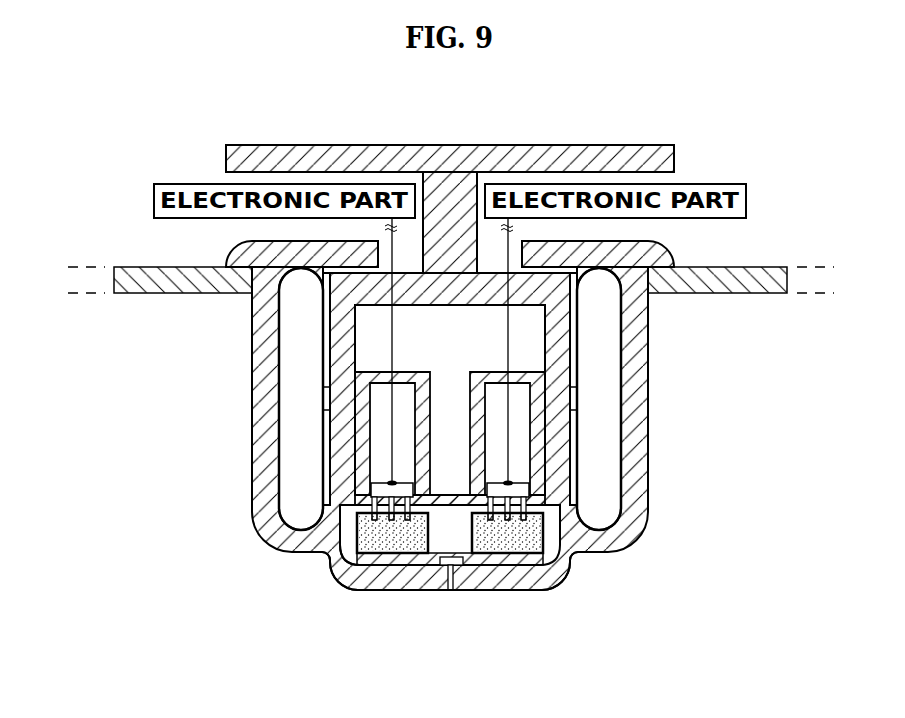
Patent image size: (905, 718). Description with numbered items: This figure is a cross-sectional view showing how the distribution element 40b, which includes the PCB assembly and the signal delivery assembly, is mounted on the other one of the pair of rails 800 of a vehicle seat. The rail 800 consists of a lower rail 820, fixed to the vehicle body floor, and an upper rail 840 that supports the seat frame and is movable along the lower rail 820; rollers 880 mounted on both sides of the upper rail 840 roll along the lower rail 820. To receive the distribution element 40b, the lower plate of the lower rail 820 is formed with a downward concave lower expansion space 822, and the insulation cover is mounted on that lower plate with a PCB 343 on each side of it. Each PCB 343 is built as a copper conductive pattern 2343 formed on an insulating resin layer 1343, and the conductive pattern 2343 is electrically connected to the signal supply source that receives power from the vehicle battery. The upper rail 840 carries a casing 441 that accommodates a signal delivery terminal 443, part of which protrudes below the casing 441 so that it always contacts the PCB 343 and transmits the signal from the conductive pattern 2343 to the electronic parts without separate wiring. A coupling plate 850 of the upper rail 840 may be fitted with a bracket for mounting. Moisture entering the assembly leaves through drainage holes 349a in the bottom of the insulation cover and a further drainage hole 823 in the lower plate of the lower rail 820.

The coupling plate 850 is at (331, 160).
The rail 800 is at (370, 415).
The lower rail 820 is at (265, 318).
The upper rail 840 is at (340, 353).
The roller 880 is at (600, 366).
The casing 441 is at (357, 428).
The signal delivery terminal 443 is at (355, 502).
The PCB 343 is at (560, 599).
The insulating resin layer 1343 is at (366, 548).
The conductive pattern 2343 is at (400, 540).
The drainage hole 823 is at (459, 579).
The drainage hole 349a is at (454, 580).
The lower expansion space 822 is at (331, 558).
The distribution element 40b is at (332, 522).